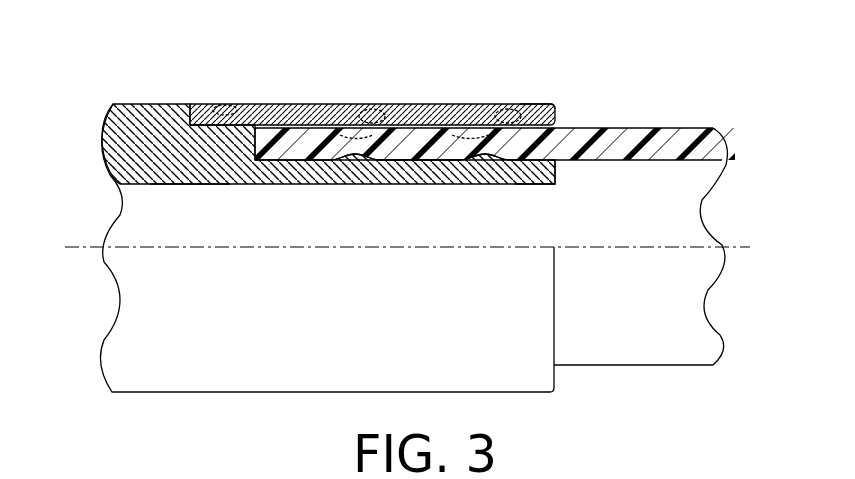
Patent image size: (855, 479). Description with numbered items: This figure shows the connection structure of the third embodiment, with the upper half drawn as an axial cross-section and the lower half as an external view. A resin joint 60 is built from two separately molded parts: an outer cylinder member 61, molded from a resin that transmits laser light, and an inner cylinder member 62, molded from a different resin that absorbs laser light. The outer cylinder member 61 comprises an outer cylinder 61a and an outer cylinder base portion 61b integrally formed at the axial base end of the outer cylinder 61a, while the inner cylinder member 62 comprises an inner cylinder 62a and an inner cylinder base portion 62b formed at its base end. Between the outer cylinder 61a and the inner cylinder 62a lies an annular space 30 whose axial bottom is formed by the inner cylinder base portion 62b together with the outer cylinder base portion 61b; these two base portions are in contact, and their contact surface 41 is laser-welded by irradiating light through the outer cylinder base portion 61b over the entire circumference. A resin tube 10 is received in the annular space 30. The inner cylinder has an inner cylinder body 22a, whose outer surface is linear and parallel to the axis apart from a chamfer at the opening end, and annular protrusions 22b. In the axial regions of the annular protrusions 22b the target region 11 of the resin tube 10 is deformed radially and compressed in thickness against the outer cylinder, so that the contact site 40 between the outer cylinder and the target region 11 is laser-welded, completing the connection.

The resin tube 10 is at (692, 126).
The target region 11 is at (352, 133).
The inner cylinder body 22a is at (433, 165).
The annular protrusion 22b is at (357, 165).
The annular space 30 is at (277, 135).
The contact site 40 is at (365, 122).
The contact surface 41 is at (223, 107).
The resin joint 60 is at (133, 103).
The outer cylinder member 61 is at (553, 102).
The outer cylinder 61a is at (527, 102).
The outer cylinder base portion 61b is at (204, 112).
The inner cylinder member 62 is at (157, 110).
The inner cylinder 62a is at (542, 172).
The inner cylinder base portion 62b is at (190, 168).